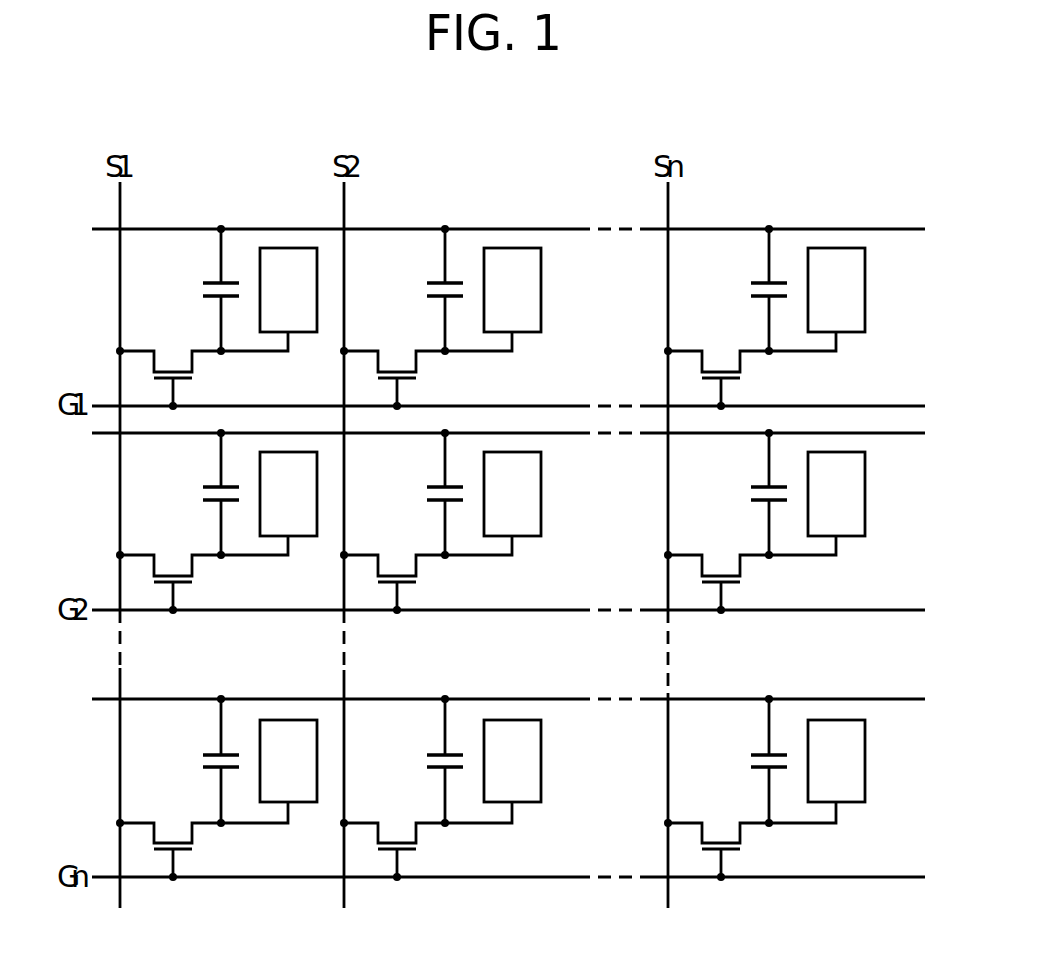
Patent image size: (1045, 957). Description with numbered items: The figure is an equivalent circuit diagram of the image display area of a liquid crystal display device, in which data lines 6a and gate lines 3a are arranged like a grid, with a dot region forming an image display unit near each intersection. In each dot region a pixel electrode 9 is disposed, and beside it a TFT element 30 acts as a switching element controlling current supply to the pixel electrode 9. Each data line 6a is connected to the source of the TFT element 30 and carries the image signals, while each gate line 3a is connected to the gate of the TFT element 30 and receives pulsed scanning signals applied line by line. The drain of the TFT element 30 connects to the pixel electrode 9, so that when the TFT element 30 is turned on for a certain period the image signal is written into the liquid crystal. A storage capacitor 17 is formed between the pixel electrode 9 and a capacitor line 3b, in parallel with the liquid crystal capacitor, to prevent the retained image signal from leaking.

The gate line 3a is at (109, 405).
The capacitor line 3b is at (108, 228).
The data line 6a is at (122, 208).
The pixel electrode 9 is at (314, 333).
The storage capacitor 17 is at (196, 287).
The TFT element 30 is at (212, 372).